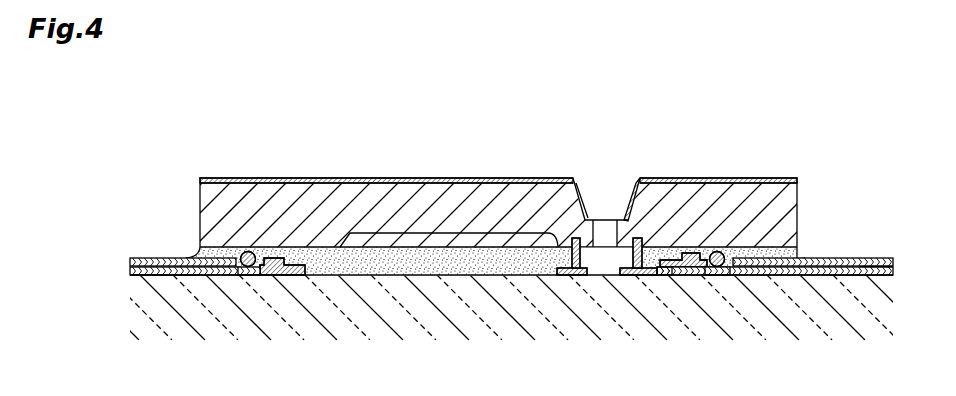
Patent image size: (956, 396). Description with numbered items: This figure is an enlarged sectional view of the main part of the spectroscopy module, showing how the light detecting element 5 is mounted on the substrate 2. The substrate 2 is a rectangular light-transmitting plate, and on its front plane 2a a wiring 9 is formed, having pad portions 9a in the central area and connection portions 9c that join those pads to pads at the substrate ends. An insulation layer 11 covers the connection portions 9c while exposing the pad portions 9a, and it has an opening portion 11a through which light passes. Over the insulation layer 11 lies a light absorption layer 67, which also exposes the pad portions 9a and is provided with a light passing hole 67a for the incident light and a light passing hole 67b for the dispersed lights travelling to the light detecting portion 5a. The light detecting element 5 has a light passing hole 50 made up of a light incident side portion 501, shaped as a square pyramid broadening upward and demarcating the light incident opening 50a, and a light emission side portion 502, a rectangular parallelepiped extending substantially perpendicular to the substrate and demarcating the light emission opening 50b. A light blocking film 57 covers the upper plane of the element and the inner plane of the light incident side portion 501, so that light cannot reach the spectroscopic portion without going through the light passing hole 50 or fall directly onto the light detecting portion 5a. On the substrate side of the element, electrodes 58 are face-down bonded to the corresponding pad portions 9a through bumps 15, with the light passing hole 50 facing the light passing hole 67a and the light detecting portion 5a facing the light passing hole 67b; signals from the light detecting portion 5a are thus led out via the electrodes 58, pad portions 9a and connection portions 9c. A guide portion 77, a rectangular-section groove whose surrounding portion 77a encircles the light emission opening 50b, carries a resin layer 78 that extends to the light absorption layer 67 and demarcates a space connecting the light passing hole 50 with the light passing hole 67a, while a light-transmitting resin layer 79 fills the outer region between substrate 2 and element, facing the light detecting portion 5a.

The substrate 2 is at (880, 301).
The front plane 2a is at (873, 266).
The light detecting element 5 is at (348, 178).
The light detecting portion 5a is at (415, 240).
The wiring 9 is at (185, 277).
The pad portions 9a is at (245, 276).
The connection portions 9c is at (155, 277).
The insulation layer 11 is at (838, 273).
The opening portion 11a is at (652, 273).
The bumps 15 is at (240, 257).
The light passing hole 50 is at (586, 179).
The light incident side portion 501 is at (587, 195).
The light emission side portion 502 is at (598, 233).
The light incident opening 50a is at (633, 182).
The light emission opening 50b is at (613, 242).
The light blocking film 57 is at (475, 180).
The electrodes 58 is at (247, 251).
The light absorption layer 67 is at (820, 260).
The light passing hole 67a is at (610, 273).
The light passing hole 67b is at (315, 272).
The guide portion 77 is at (631, 201).
The surrounding portion 77a is at (636, 240).
The resin layer 78 is at (565, 273).
The light-transmitting resin layer 79 is at (432, 262).